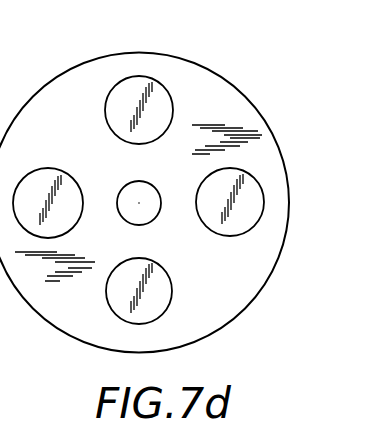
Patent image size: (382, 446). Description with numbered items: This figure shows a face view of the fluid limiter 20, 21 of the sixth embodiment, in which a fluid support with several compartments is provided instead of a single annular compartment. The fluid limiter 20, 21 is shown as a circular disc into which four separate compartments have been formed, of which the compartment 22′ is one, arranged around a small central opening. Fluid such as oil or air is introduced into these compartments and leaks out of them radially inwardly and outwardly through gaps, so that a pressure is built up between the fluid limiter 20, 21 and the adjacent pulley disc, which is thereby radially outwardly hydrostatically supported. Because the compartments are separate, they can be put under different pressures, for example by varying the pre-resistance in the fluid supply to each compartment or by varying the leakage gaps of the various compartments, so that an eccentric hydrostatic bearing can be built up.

The fluid limiter 20 is at (150, 201).
The fluid limiter 21 is at (218, 83).
The compartment 22′ is at (106, 109).